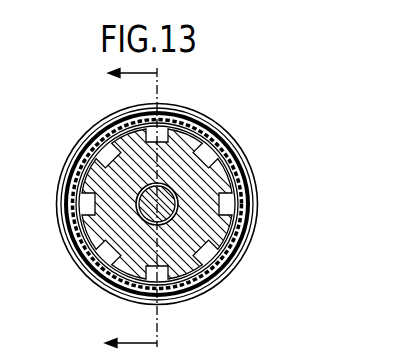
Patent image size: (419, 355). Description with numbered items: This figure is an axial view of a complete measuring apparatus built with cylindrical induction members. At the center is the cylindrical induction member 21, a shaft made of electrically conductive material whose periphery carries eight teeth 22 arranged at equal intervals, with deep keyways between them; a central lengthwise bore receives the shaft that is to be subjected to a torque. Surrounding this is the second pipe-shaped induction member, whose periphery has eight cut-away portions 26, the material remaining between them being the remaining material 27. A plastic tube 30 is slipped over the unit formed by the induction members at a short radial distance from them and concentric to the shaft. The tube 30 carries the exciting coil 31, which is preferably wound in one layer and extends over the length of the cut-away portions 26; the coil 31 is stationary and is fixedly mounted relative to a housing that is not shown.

The cylindrical induction member 21 is at (106, 271).
The teeth 22 is at (178, 134).
The cut-away portions 26 is at (242, 147).
The remaining material 27 is at (208, 126).
The plastic tube 30 is at (71, 263).
The exciting coil 31 is at (122, 236).